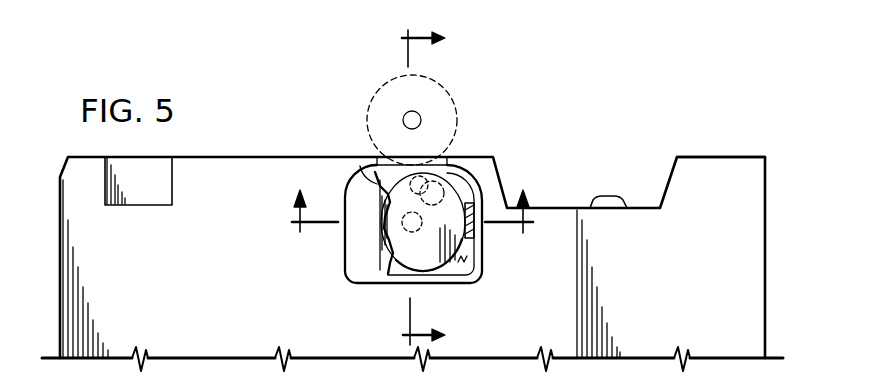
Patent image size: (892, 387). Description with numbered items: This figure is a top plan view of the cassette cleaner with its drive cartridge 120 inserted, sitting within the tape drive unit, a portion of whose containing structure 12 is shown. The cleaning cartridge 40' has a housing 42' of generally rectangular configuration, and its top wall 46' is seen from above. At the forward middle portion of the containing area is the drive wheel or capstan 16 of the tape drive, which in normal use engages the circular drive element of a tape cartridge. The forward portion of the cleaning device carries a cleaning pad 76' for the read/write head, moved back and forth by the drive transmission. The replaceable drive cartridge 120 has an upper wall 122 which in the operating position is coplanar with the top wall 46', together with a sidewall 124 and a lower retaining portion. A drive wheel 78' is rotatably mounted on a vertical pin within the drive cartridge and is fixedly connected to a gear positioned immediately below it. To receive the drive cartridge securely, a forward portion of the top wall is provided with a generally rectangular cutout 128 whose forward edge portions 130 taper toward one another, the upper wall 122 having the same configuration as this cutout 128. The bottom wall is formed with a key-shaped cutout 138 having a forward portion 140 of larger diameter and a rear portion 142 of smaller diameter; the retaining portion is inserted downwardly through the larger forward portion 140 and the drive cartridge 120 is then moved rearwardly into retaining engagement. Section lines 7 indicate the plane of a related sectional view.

The containing structure 12 is at (437, 188).
The section line 7- 7 is at (412, 216).
The drive wheel or capstan 16 is at (447, 92).
The key-shaped cutout 138 is at (447, 180).
The forward portion of the key-shaped cutout 140 is at (462, 185).
The forward edge portions 130 is at (369, 187).
The drive cartridge 120 is at (343, 176).
The cutout 128 is at (353, 232).
The upper wall 122 is at (353, 263).
The sidewall 124 is at (476, 232).
The rear portion of the key-shaped cutout 142 is at (418, 232).
The drive wheel 78' is at (458, 242).
The cleaning pad 76' is at (623, 171).
The cleaning cartridge 40' is at (412, 229).
The housing 42' is at (721, 134).
The top wall 46' is at (612, 283).